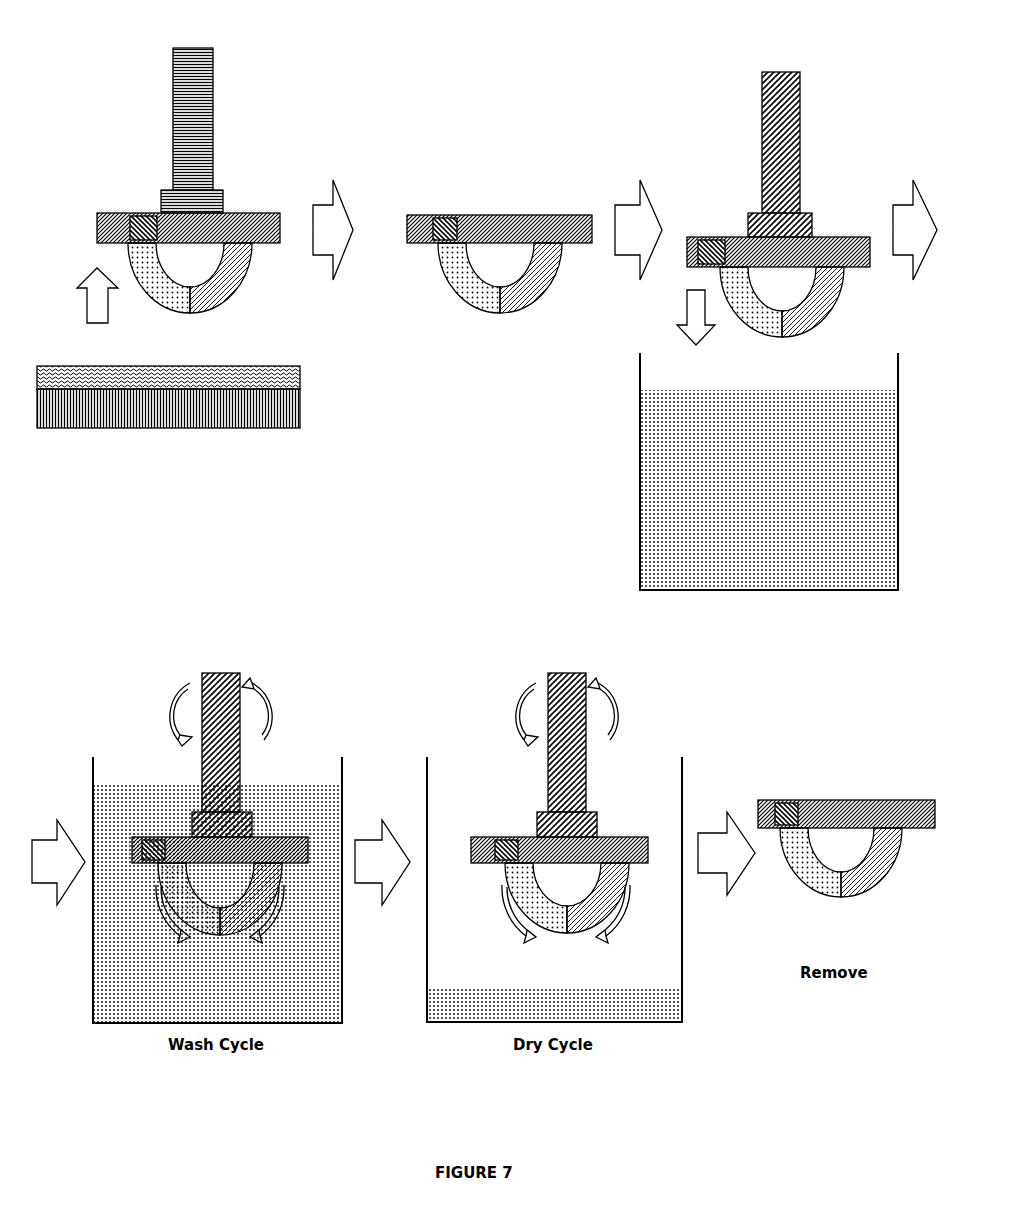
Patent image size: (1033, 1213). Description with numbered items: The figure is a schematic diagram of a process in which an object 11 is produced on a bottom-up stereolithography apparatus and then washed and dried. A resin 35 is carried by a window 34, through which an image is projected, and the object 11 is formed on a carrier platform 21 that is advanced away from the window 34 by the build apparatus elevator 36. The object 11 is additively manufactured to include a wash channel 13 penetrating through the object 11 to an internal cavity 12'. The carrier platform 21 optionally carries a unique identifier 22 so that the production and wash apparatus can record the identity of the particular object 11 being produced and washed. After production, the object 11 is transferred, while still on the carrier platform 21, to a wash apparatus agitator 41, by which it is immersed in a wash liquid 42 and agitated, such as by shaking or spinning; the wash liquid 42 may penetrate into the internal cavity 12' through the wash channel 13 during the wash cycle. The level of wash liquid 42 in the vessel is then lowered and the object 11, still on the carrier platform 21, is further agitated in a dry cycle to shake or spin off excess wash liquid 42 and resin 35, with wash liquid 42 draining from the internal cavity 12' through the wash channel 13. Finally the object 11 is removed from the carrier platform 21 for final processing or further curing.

The object 11 is at (515, 589).
The internal cavity 12' is at (555, 592).
The wash channel 13 is at (257, 247).
The carrier platform 21 is at (853, 800).
The unique identifier 22 is at (787, 800).
The window 34 is at (130, 405).
The resin 35 is at (300, 383).
The build apparatus elevator 36 is at (213, 145).
The wash apparatus agitator 41 is at (762, 188).
The wash liquid 42 is at (496, 706).